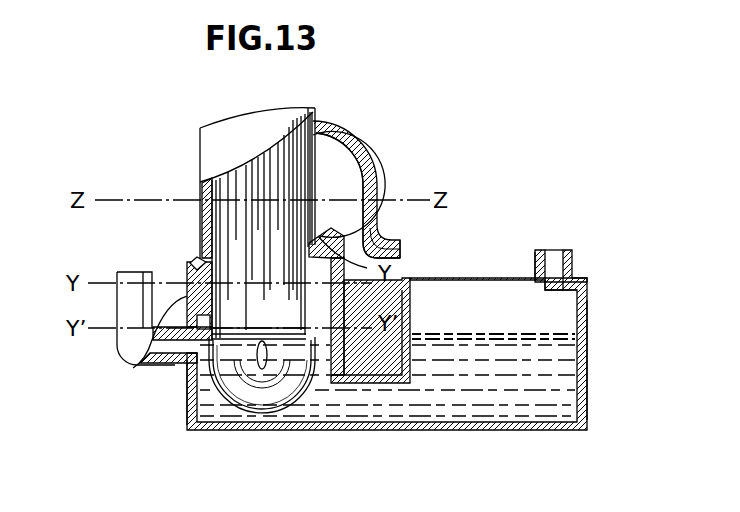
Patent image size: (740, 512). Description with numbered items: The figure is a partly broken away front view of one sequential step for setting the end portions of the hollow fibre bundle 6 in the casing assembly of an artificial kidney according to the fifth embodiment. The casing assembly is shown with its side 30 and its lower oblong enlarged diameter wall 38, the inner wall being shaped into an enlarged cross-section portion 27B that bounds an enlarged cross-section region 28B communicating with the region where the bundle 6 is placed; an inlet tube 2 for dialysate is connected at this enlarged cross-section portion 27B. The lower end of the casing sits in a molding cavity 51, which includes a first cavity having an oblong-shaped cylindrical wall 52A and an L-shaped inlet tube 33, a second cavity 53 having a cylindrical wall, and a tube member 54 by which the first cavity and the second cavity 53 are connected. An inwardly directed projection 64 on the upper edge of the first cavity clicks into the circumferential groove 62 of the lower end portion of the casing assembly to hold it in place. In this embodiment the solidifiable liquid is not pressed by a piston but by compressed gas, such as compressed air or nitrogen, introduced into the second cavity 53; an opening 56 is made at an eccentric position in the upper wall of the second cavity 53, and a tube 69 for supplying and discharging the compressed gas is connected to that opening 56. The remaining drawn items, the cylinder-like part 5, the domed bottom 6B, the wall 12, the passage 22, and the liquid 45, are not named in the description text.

The inlet tube 2 is at (401, 254).
The cylinder 5 is at (257, 168).
The bundle 6 is at (319, 142).
The ball dome bottom 6B is at (259, 400).
The housing wall 12 is at (190, 368).
The valve passage 22 is at (373, 221).
The enlarged cross-section portion 27B is at (367, 150).
The enlarged cross-section region 28B is at (373, 176).
The side of the casing assembly 30 is at (201, 160).
The L-shaped inlet tube 33 is at (124, 283).
The lower oblong enlarged diameter wall 38 is at (344, 299).
The liquid 45 is at (393, 405).
The molding cavity 51 is at (452, 274).
The oblong-shaped cylindrical wall 52A is at (158, 363).
The second cavity 53 is at (588, 322).
The tube member 54 is at (367, 376).
The opening 56 is at (573, 258).
The circumferential groove 62 is at (197, 262).
The inwardly directed projection 64 is at (191, 266).
The tube 69 is at (539, 262).